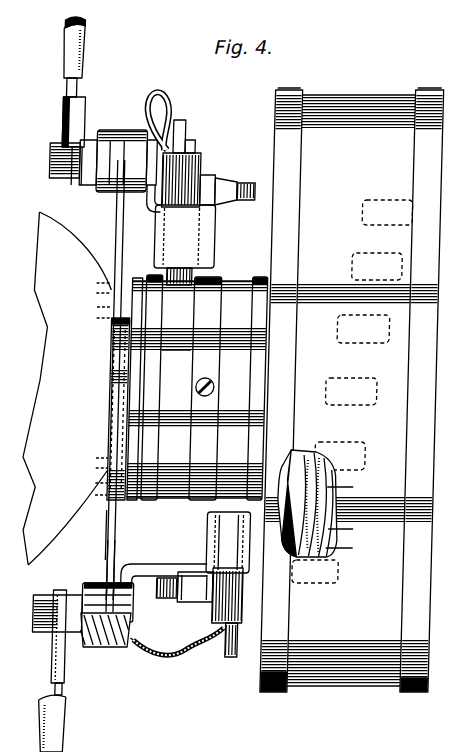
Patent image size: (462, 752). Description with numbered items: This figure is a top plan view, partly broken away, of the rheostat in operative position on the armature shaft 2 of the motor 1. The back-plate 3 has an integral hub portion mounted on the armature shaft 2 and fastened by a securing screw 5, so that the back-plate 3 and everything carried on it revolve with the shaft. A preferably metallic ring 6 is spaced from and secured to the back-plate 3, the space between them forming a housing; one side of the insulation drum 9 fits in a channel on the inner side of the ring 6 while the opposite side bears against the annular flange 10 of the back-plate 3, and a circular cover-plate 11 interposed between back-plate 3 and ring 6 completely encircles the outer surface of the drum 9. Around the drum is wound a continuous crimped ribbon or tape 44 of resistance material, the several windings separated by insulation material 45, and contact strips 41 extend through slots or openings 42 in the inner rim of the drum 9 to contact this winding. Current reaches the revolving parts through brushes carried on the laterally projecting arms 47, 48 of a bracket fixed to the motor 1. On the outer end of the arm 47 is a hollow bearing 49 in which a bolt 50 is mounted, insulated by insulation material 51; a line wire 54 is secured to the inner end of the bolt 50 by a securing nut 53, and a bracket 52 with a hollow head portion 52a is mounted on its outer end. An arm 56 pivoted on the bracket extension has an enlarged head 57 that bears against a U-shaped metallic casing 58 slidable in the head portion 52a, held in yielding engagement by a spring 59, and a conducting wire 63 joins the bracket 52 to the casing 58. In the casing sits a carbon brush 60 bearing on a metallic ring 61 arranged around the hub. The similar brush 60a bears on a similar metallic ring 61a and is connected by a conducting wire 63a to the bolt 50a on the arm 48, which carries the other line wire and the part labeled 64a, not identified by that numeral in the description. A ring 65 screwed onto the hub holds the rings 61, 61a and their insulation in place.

The motor 1 is at (61, 250).
The armature shaft 2 is at (128, 400).
The back-plate 3 is at (334, 407).
The securing screw 5 is at (215, 397).
The ring 6 is at (432, 692).
The insulation drum 9 is at (302, 450).
The annular flange 10 is at (291, 692).
The circular cover-plate 11 is at (361, 686).
The contact strip 41 is at (353, 528).
The slots or openings 42 is at (366, 352).
The ribbon or tape 44 is at (352, 486).
The insulation material 45 is at (351, 547).
The arm 47 is at (122, 524).
The arm 48 is at (122, 226).
The hollow bearing 49 is at (95, 567).
The bolt 50 is at (150, 600).
The bolt 50a is at (54, 160).
The insulation material 51 is at (118, 647).
The bracket 52 is at (165, 565).
The hollow head portion 52a is at (228, 582).
The securing nut 53 is at (50, 632).
The line wire 54 is at (80, 724).
The arm 56 is at (232, 658).
The enlarged head 57 is at (256, 657).
The U-shaped metallic casing 58 is at (218, 655).
The spring 59 is at (215, 547).
The carbon brush 60 is at (232, 600).
The brush 60a is at (190, 185).
The metallic ring 61 is at (197, 390).
The metallic ring 61a is at (191, 492).
The conducting wire 63 is at (134, 654).
The conducting wire 63a is at (160, 92).
The handle 64a is at (70, 60).
The ring 65 is at (127, 345).